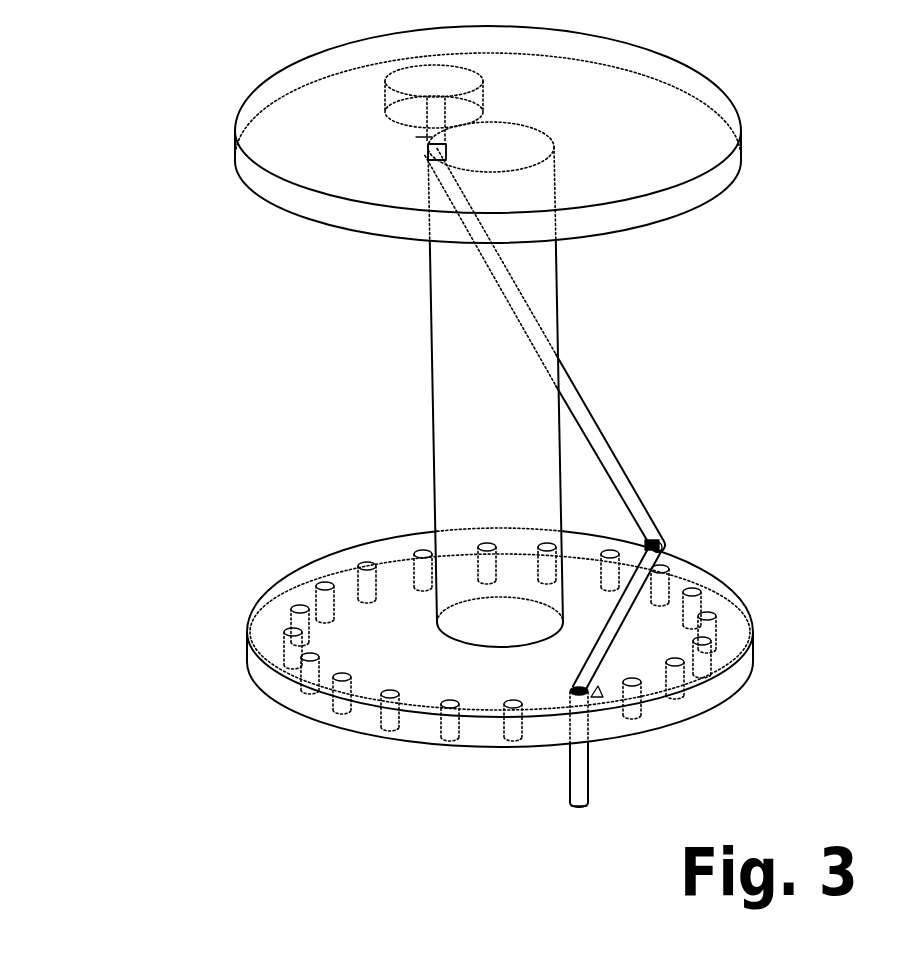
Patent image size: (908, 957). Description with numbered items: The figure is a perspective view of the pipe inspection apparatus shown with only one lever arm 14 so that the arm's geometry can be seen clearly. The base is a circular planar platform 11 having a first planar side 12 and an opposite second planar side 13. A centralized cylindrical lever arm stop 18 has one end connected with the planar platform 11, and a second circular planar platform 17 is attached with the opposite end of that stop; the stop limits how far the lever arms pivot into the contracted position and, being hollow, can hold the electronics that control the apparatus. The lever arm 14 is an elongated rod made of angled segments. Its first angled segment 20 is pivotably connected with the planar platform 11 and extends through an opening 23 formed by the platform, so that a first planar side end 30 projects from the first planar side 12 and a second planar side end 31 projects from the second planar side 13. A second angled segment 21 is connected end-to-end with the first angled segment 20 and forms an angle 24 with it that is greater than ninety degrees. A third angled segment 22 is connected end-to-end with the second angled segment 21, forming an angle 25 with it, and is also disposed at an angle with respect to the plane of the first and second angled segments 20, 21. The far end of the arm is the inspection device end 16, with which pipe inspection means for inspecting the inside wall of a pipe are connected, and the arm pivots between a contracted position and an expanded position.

The circular planar platform 11 is at (753, 631).
The first planar side 12 is at (733, 585).
The second planar side 13 is at (263, 697).
The lever arm 14 is at (612, 418).
The inspection device end 16 is at (417, 138).
The second circular planar platform 17 is at (742, 128).
The centralized cylindrical lever arm stop 18 is at (556, 298).
The first angled segment 20 is at (590, 767).
The second angled segment 21 is at (684, 582).
The third angled segment 22 is at (567, 373).
The opening 23 is at (505, 712).
The angle 24 is at (604, 692).
The angle 25 is at (636, 546).
The first planar side end 30 is at (572, 694).
The second planar side end 31 is at (575, 804).